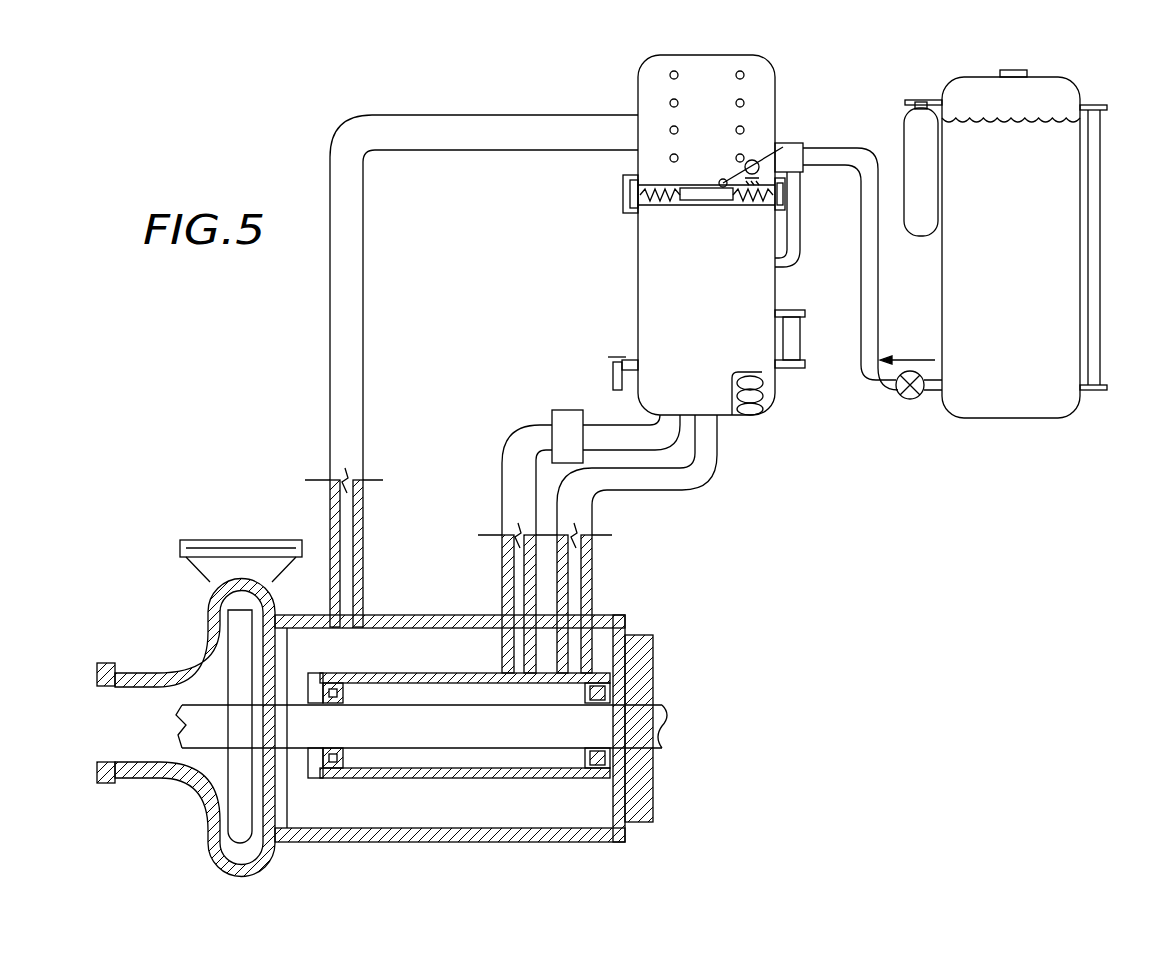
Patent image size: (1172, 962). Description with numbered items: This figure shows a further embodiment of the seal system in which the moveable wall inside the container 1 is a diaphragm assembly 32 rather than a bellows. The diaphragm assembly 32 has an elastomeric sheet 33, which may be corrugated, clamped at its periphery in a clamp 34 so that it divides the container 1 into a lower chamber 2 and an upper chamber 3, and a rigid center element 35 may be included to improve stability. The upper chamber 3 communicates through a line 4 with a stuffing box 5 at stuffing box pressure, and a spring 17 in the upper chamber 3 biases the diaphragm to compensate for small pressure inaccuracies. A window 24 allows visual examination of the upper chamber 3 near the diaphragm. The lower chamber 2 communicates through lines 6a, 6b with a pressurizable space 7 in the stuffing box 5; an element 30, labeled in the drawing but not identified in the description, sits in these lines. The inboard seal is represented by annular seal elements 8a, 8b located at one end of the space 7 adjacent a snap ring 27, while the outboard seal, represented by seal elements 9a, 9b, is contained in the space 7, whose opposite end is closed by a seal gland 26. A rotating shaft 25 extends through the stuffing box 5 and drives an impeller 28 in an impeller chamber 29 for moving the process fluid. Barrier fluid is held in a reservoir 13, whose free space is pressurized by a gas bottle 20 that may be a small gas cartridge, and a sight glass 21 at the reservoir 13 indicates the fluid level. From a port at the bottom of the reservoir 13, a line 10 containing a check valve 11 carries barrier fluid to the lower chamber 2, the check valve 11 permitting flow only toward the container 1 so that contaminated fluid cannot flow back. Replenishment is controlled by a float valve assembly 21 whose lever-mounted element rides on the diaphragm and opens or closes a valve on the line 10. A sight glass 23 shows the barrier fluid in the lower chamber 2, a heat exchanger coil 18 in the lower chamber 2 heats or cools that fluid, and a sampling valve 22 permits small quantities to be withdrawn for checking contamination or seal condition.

The container 1 is at (625, 292).
The lower chamber 2 is at (655, 338).
The upper chamber 3 is at (652, 108).
The line 4 is at (330, 335).
The stuffing box 5 is at (400, 812).
The line 6a is at (502, 580).
The line 6b is at (593, 580).
The pressurizable space 7 is at (465, 757).
The annular seal element 8a is at (368, 712).
The annular seal element 8b is at (328, 748).
The seal element 9a is at (588, 762).
The seal element 9b is at (605, 762).
The line 10 is at (858, 265).
The check valve 11 is at (915, 400).
The reservoir 13 is at (1053, 92).
The spring 17 is at (672, 102).
The heat exchanger coil 18 is at (725, 418).
The gas bottle 20 is at (920, 157).
The float valve assembly 21 is at (752, 160).
The sampling valve 22 is at (612, 378).
The sight glass 23 is at (803, 337).
The window 24 is at (624, 195).
The rotating shaft 25 is at (648, 737).
The seal gland 26 is at (655, 672).
The snap ring 27 is at (305, 767).
The impeller 28 is at (228, 663).
The impeller chamber 29 is at (205, 793).
The filter 30 is at (560, 410).
The diaphragm assembly 32 is at (662, 219).
The elastomeric sheet 33 is at (657, 187).
The clamp 34 is at (790, 190).
The rigid center element 35 is at (702, 205).